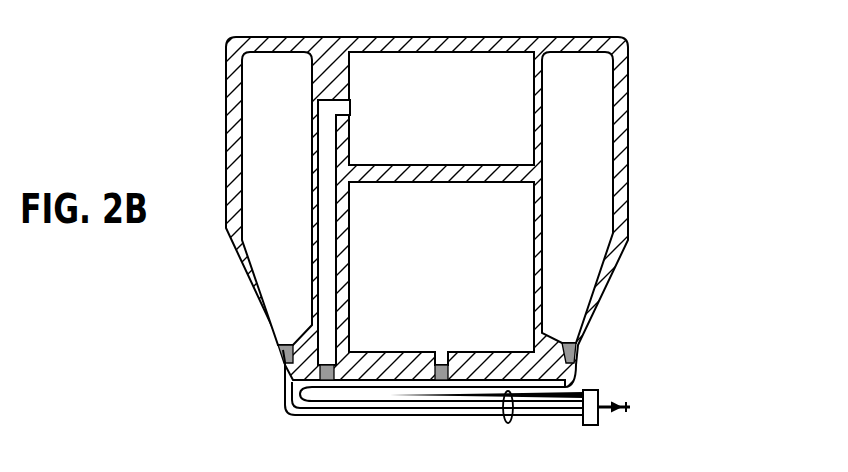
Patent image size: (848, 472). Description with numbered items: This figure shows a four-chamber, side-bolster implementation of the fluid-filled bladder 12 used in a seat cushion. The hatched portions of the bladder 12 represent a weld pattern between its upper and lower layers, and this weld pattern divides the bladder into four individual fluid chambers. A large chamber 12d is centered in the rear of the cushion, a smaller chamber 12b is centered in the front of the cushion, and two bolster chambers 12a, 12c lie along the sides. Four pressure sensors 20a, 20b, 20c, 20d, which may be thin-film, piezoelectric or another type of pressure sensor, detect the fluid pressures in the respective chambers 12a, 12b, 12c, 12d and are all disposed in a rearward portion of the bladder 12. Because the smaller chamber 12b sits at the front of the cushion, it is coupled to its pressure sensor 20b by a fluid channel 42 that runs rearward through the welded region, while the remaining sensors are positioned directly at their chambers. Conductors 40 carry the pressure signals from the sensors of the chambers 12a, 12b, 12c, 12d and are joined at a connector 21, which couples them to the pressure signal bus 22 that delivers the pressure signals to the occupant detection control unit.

The fluid-filled bladder 12 is at (720, 240).
The bolster chamber 12a is at (583, 123).
The smaller front chamber 12b is at (388, 67).
The bolster chamber 12c is at (270, 123).
The large rear chamber 12d is at (498, 210).
The pressure sensor 20a is at (576, 350).
The pressure sensor 20b is at (322, 328).
The pressure sensor 20c is at (286, 348).
The pressure sensor 20d is at (443, 352).
The connector 21 is at (588, 427).
The pressure signal bus 22 is at (617, 415).
The conductors 40 is at (506, 423).
The fluid channel 42 is at (323, 252).